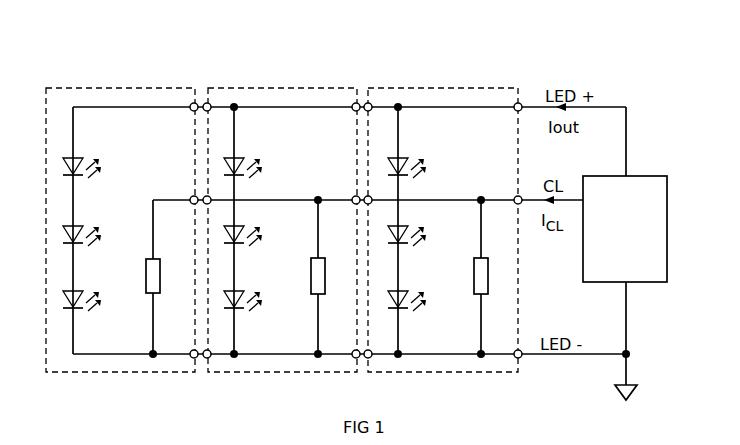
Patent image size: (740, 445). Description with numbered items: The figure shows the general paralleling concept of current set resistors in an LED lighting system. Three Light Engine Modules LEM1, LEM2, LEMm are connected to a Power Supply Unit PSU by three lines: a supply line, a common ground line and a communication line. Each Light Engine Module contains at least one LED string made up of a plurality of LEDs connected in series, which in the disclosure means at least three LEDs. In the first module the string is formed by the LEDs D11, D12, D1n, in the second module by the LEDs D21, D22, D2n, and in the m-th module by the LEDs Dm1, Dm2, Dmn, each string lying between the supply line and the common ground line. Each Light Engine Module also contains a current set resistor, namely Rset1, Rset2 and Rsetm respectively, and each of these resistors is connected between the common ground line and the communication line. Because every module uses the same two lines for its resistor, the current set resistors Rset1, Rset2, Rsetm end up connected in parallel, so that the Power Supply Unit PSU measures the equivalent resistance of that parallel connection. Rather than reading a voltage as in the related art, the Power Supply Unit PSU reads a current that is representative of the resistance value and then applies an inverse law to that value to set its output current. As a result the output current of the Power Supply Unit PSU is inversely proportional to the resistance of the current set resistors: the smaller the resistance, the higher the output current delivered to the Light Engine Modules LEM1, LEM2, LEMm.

The Light Engine Module LEM1 is at (119, 82).
The Light Engine Module LEM2 is at (283, 82).
The Light Engine Module LEMm is at (447, 82).
The LED D11 is at (89, 156).
The LED D12 is at (89, 224).
The LED D1n is at (89, 289).
The LED D21 is at (251, 156).
The LED D22 is at (255, 226).
The LED D2n is at (251, 290).
The LED Dm1 is at (417, 156).
The LED Dm2 is at (418, 226).
The LED Dmn is at (417, 290).
The current set resistor Rset1 is at (168, 277).
The current set resistor Rset2 is at (332, 277).
The current set resistor Rsetm is at (492, 277).
The Power Supply Unit PSU is at (625, 229).